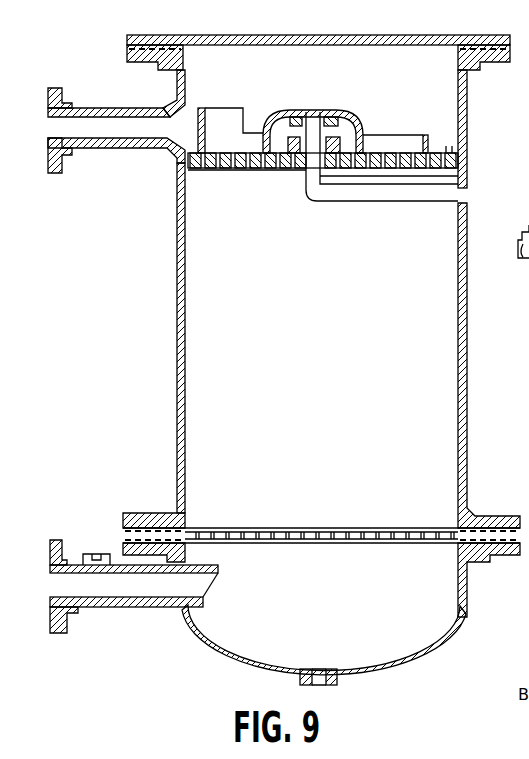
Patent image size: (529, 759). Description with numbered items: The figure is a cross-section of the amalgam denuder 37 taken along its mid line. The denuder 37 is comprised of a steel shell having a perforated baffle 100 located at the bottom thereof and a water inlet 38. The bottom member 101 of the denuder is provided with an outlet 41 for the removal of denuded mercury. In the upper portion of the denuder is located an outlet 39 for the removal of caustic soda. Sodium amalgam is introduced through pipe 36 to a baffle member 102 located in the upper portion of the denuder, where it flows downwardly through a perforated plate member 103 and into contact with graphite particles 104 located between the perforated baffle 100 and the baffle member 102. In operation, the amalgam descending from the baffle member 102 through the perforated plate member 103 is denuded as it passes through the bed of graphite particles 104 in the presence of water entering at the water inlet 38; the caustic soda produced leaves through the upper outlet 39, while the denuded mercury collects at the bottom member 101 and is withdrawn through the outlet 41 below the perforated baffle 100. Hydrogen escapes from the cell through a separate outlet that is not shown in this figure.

The pipe 36 is at (470, 189).
The amalgam denuder 37 is at (468, 100).
The water inlet 38 is at (70, 562).
The outlet 39 is at (91, 88).
The outlet 41 is at (341, 680).
The perforated baffle 100 is at (317, 537).
The bottom member 101 is at (220, 648).
The baffle member 102 is at (352, 123).
The perforated plate member 103 is at (445, 153).
The graphite particles 104 is at (326, 301).